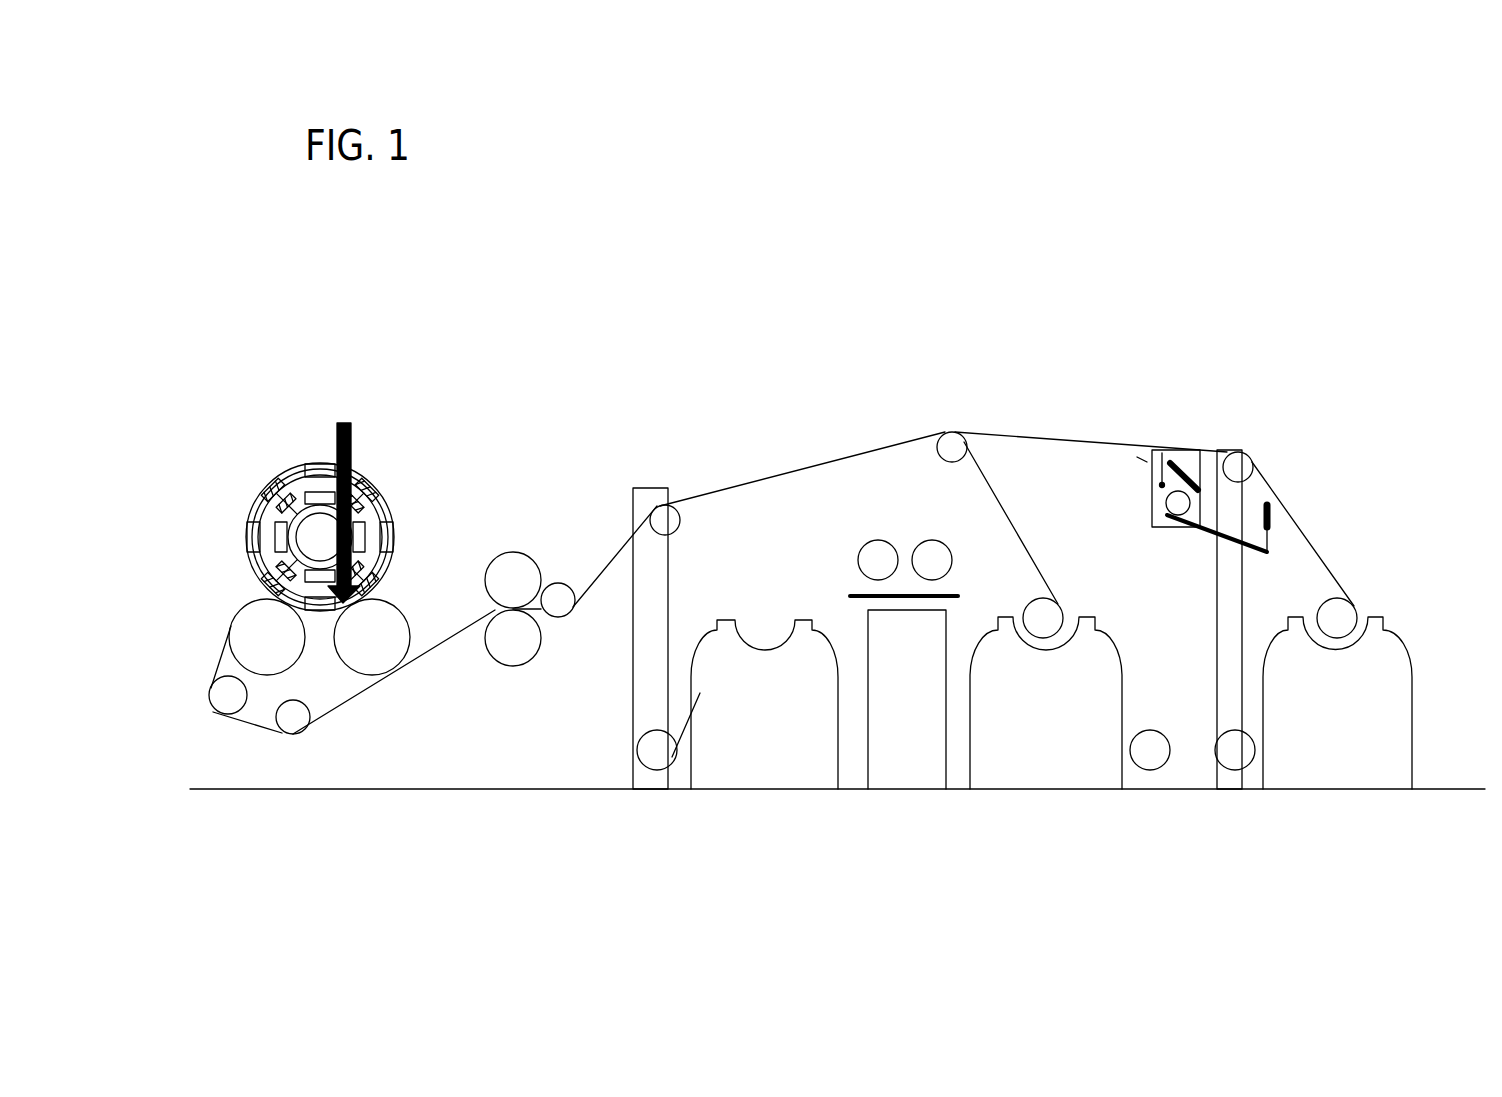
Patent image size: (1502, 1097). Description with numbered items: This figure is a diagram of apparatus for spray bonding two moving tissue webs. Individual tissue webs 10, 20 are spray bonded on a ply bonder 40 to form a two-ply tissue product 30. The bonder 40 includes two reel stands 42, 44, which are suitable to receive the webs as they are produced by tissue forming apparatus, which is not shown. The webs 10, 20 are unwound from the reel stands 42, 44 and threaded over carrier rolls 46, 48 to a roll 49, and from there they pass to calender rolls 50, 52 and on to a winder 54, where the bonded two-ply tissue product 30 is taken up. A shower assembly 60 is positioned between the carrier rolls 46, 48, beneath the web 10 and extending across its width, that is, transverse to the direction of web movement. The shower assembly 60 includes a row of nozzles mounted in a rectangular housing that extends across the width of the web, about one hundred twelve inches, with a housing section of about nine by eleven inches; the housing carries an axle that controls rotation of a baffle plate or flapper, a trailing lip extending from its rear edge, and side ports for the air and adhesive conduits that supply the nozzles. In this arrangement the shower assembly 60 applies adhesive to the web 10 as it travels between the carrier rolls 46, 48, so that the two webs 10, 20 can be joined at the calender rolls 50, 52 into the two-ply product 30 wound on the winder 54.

The tissue web 10 is at (707, 492).
The tissue web 20 is at (733, 490).
The two-ply tissue product 30 is at (392, 518).
The ply bonder 40 is at (837, 525).
The reel stand 42 is at (1412, 752).
The reel stand 44 is at (1122, 712).
The carrier roll 46 is at (1253, 460).
The carrier roll 48 is at (962, 432).
The roll 49 is at (677, 523).
The calender roll 50 is at (530, 543).
The calender roll 52 is at (540, 676).
The winder 54 is at (282, 652).
The shower assembly 60 is at (1163, 505).